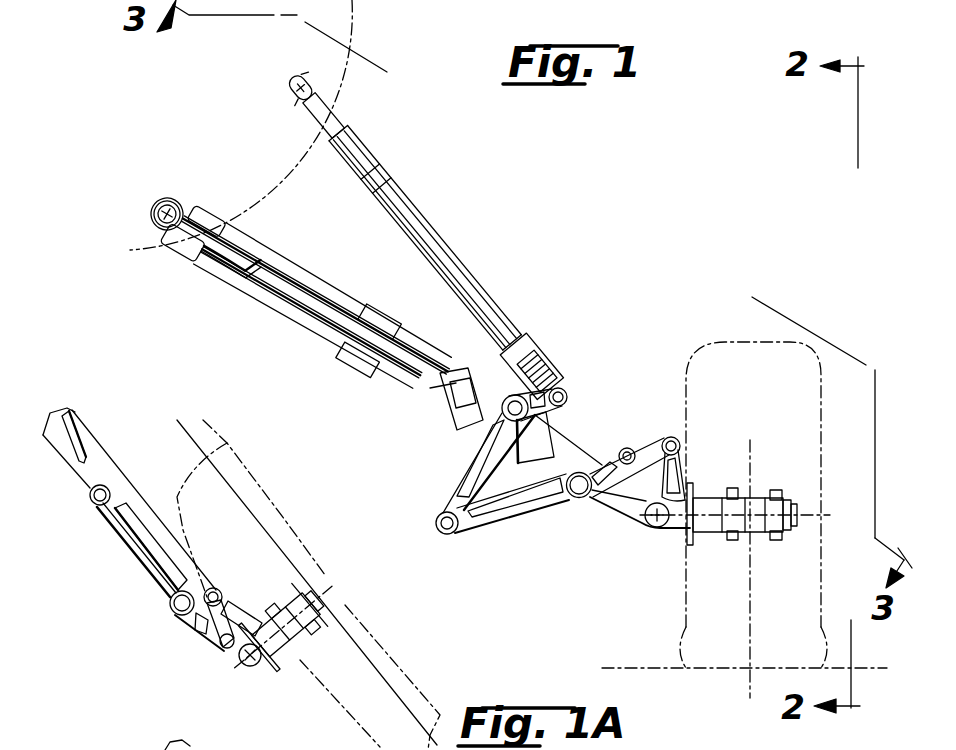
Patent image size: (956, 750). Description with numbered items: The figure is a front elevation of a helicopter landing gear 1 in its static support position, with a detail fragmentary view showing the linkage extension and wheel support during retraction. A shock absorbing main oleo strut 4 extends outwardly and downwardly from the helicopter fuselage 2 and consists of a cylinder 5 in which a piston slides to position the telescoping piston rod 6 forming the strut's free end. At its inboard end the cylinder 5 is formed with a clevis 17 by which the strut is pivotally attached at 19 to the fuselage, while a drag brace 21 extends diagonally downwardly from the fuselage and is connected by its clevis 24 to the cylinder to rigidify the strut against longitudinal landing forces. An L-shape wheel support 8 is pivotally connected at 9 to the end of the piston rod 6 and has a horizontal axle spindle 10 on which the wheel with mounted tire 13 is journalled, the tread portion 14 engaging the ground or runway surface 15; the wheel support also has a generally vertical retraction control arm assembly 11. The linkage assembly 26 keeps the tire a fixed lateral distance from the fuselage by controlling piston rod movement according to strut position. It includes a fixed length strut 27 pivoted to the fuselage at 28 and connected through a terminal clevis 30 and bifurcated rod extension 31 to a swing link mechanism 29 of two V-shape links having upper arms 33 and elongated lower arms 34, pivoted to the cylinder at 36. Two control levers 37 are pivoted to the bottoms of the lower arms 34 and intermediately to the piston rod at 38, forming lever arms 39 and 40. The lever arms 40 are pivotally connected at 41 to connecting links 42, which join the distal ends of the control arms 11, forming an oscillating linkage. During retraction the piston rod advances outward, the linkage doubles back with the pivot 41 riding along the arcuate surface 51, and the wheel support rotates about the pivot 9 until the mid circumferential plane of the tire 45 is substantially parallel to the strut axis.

In FIG. 1, the landing gear 1 is at (504, 220).
In FIG. 1, the helicopter fuselage 2 is at (352, 17).
In FIG. 1, the main oleo strut 4 is at (336, 370).
In FIG. 1, the cylinder 5 is at (397, 387).
In FIG. 1, the telescoping piston rod 6 is at (620, 502).
In FIG. 1A, the telescoping piston rod 6 is at (118, 467).
In FIG. 1, the L-shape wheel support 8 is at (670, 545).
In FIG. 1, the pivotal connection of wheel support 9 is at (650, 528).
In FIG. 1A, the pivotal connection of wheel support 9 is at (254, 665).
In FIG. 1, the axle spindle 10 is at (762, 495).
In FIG. 1A, the axle spindle 10 is at (345, 598).
In FIG. 1, the retraction control arm assembly 11 is at (685, 470).
In FIG. 1A, the retraction control arm assembly 11 is at (240, 610).
In FIG. 1, the wheel with mounted tire 13 is at (823, 442).
In FIG. 1A, the wheel with mounted tire 13 is at (222, 442).
In FIG. 1, the tread portion 14 is at (712, 672).
In FIG. 1, the ground or runway surface 15 is at (640, 665).
In FIG. 1A, the clevis 17 is at (230, 749).
In FIG. 1A, the pivotal attachment of oleo strut 19 is at (152, 748).
In FIG. 1, the drag brace 21 is at (298, 278).
In FIG. 1, the clevis 24 is at (445, 396).
In FIG. 1, the linkage assembly 26 is at (587, 492).
In FIG. 1, the fixed length connecting rod or strut 27 is at (427, 210).
In FIG. 1, the pivotal mounting of fixed length strut 28 is at (297, 78).
In FIG. 1, the swing link or lever mechanism 29 is at (566, 424).
In FIG. 1, the terminal clevis 30 is at (537, 343).
In FIG. 1, the bifurcated rod extension 31 is at (567, 390).
In FIG. 1, the upper arms 33 is at (505, 380).
In FIG. 1, the elongated lower arms 34 is at (470, 466).
In FIG. 1A, the elongated lower arms 34 is at (80, 423).
In FIG. 1, the swing link pivotal connection 36 is at (537, 436).
In FIG. 1, the control levers 37 is at (522, 536).
In FIG. 1, the intermediate pivotal connection 38 is at (577, 502).
In FIG. 1A, the intermediate pivotal connection 38 is at (168, 605).
In FIG. 1, the lever arm 39 is at (504, 528).
In FIG. 1A, the lever arm 39 is at (115, 535).
In FIG. 1, the lever arm 40 is at (600, 462).
In FIG. 1A, the lever arm 40 is at (192, 622).
In FIG. 1, the pivot 41 is at (628, 447).
In FIG. 1A, the pivot 41 is at (224, 650).
In FIG. 1, the connecting links 42 is at (665, 437).
In FIG. 1A, the connecting links 42 is at (210, 632).
In FIG. 1, the mid circumferential plane of the tire 45 is at (750, 695).
In FIG. 1A, the arcuate surface 51 is at (235, 662).